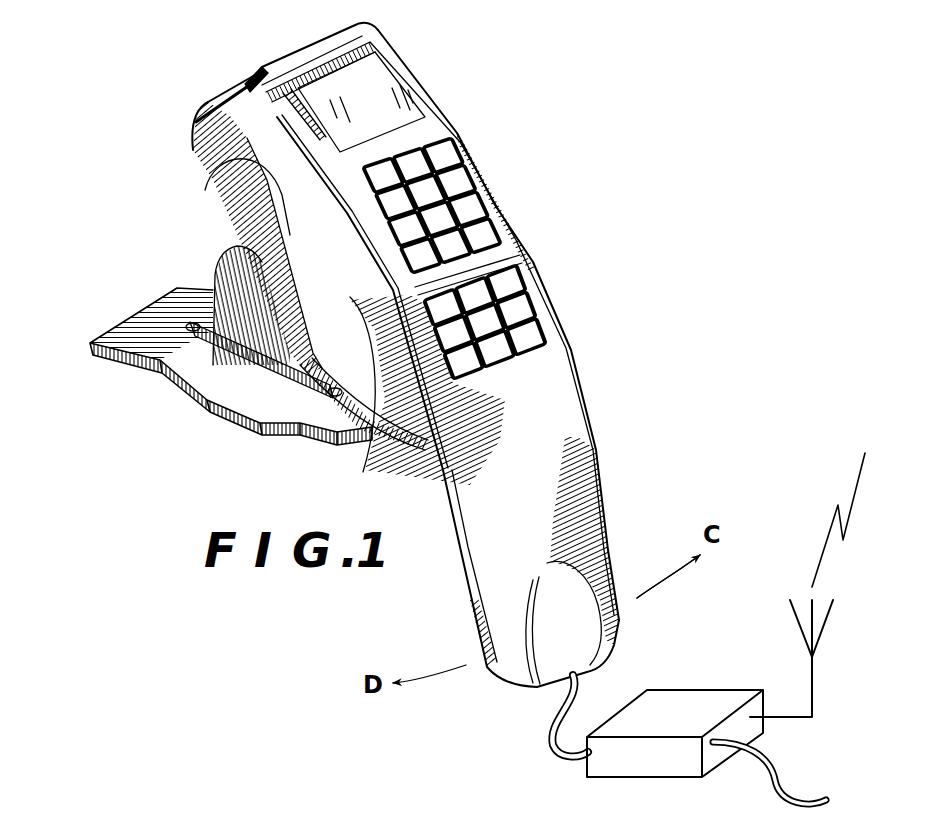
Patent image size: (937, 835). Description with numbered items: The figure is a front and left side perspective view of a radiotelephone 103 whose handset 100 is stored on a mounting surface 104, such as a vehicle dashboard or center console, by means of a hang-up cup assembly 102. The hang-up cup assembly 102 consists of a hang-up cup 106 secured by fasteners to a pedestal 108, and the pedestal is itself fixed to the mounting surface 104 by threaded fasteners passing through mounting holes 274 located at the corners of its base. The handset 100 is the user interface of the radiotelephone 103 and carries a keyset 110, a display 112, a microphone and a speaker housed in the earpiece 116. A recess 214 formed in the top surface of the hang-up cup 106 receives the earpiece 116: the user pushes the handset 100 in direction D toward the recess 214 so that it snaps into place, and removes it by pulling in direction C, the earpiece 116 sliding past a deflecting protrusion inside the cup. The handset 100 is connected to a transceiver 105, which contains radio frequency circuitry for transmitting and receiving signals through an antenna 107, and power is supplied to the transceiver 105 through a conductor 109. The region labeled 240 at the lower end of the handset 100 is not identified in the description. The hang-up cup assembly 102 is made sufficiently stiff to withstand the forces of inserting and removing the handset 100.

The handset 100 is at (494, 140).
The hang-up cup assembly 102 is at (178, 185).
The radiotelephone 103 is at (663, 178).
The mounting surface 104 is at (155, 397).
The transceiver 105 is at (603, 780).
The hang-up cup 106 is at (231, 98).
The antenna 107 is at (814, 680).
The pedestal 108 is at (212, 298).
The conductor 109 is at (778, 800).
The keyset 110 is at (492, 207).
The display 112 is at (388, 70).
The earpiece 116 is at (368, 445).
The recess 214 is at (212, 158).
The mouthpiece end 240 is at (622, 623).
The mounting holes 274 is at (190, 326).